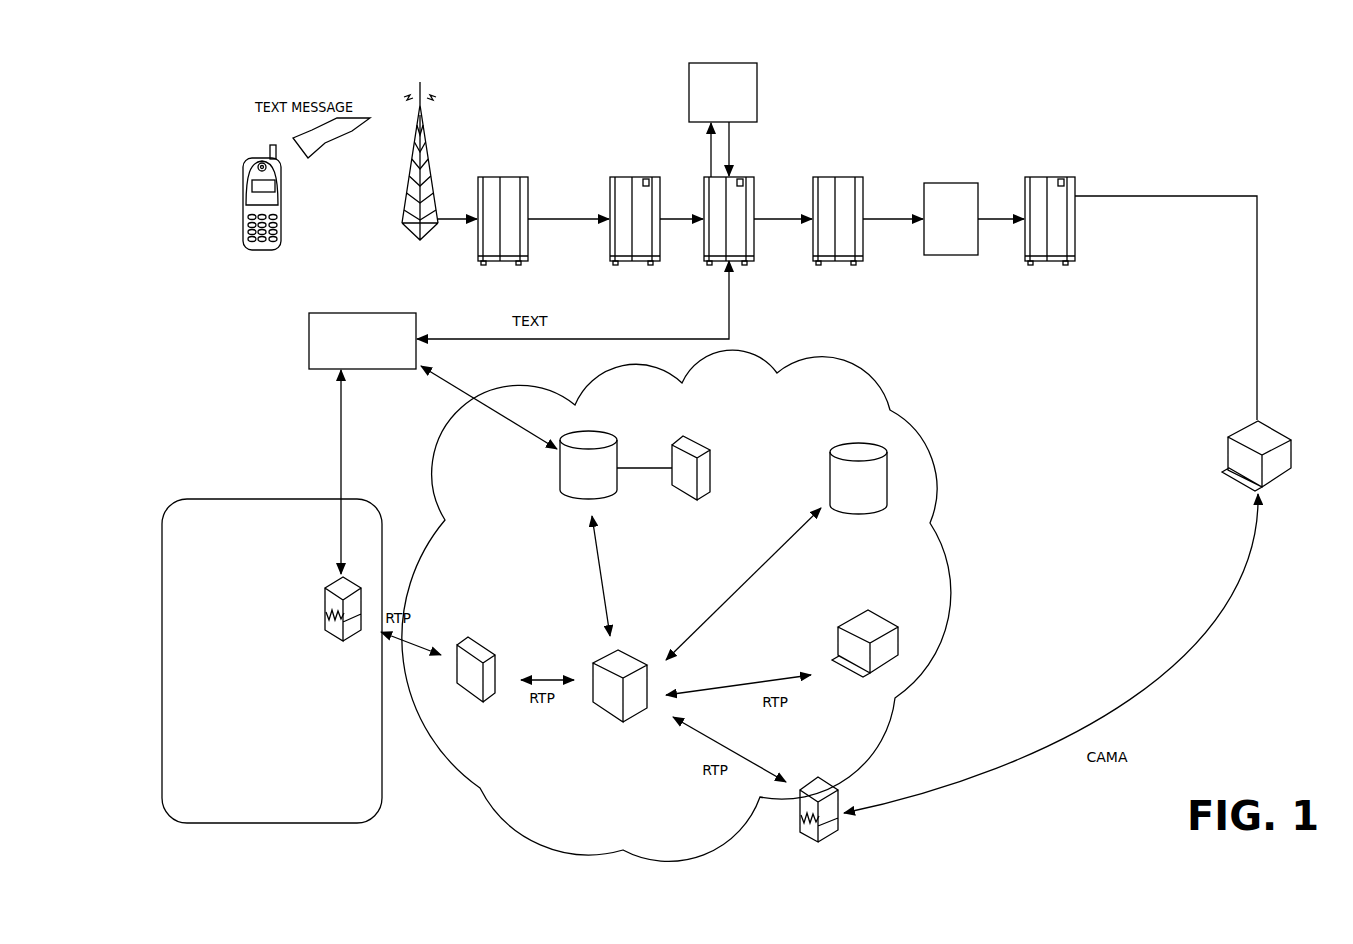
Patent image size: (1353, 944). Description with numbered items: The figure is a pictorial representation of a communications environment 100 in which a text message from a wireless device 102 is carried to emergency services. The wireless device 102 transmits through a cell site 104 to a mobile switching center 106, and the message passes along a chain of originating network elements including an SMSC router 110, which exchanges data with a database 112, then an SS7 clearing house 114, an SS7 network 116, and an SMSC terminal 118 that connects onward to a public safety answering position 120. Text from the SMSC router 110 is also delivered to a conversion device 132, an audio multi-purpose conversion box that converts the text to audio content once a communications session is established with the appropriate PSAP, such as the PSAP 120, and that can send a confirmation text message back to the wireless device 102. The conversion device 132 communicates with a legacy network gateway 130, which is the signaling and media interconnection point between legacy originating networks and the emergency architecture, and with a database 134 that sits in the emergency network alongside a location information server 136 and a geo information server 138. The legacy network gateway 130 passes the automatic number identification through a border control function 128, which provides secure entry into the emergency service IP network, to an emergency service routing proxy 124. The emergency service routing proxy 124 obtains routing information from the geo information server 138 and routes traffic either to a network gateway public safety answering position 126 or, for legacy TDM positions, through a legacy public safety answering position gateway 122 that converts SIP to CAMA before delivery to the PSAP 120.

The communications environment 100 is at (188, 77).
The wireless device 102 is at (233, 203).
The cell site 104 is at (432, 132).
The mobile switching center 106 is at (505, 167).
The SMSC router 110 is at (748, 170).
The database 112 is at (735, 57).
The SS7 clearing house 114 is at (870, 175).
The SS7 network 116 is at (940, 180).
The SMSC terminal 118 is at (1077, 185).
The public safety answering position 120 is at (1272, 420).
The legacy public safety answering position gateway 122 is at (817, 778).
The emergency service routing proxy 124 is at (655, 640).
The network gateway public safety answering position 126 is at (855, 608).
The border control function 128 is at (475, 635).
The legacy network gateway 130 is at (325, 615).
The conversion device 132 is at (323, 312).
The database 134 is at (567, 473).
The location information server 136 is at (712, 462).
The geo information server 138 is at (890, 478).